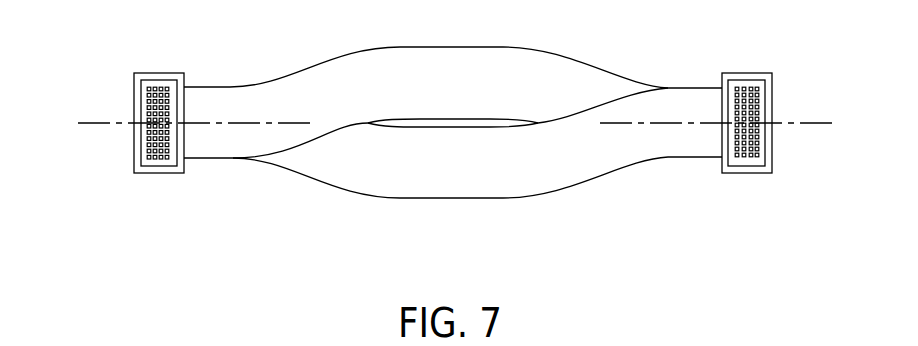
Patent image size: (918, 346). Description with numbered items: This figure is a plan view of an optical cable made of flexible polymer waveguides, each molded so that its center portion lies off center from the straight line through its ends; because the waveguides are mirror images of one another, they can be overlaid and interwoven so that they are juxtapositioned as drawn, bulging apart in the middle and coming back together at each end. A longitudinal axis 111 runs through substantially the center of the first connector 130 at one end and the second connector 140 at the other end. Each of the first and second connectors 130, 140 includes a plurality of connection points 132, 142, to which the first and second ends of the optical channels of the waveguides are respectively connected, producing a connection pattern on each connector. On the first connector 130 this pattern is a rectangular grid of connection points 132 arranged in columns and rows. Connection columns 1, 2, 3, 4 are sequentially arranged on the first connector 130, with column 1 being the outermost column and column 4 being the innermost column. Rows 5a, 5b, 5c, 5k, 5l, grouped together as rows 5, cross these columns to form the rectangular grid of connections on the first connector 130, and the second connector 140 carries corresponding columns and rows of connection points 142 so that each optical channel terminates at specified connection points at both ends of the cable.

The connection column 1 is at (150, 89).
The connection column 2 is at (156, 89).
The connection column 3 is at (162, 89).
The connection column 4 is at (168, 89).
The rows 5 is at (78, 86).
The row 5a is at (147, 89).
The row 5b is at (147, 95).
The row 5c is at (147, 101).
The row 5k is at (147, 151).
The row 5l is at (147, 157).
The longitudinal axis 111 is at (807, 123).
The first connector 130 is at (156, 173).
The connection points 132 is at (143, 80).
The second connector 140 is at (747, 173).
The connection points 142 is at (767, 90).